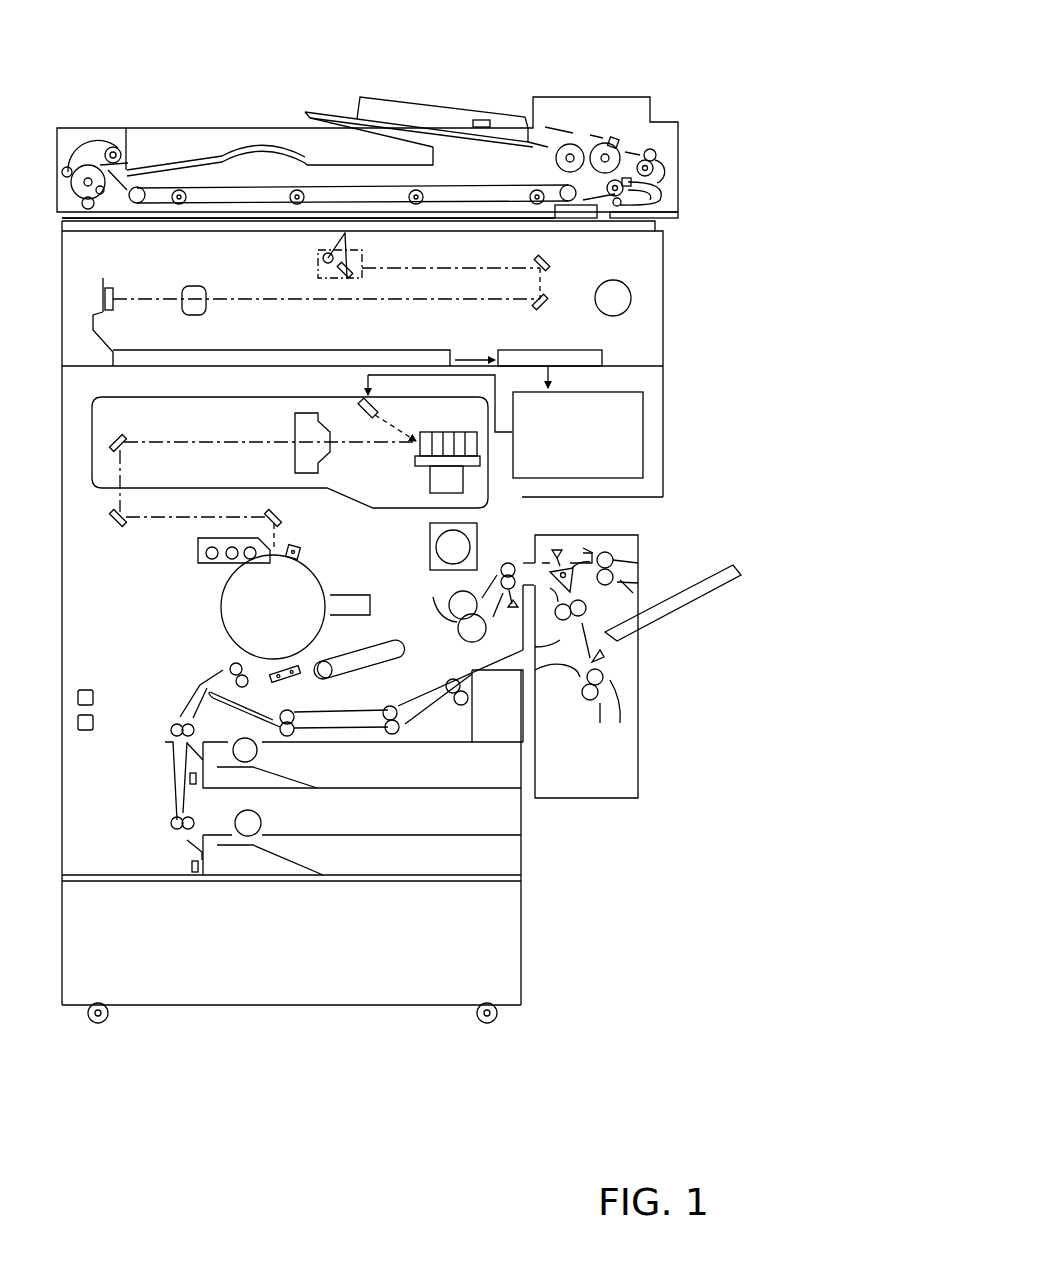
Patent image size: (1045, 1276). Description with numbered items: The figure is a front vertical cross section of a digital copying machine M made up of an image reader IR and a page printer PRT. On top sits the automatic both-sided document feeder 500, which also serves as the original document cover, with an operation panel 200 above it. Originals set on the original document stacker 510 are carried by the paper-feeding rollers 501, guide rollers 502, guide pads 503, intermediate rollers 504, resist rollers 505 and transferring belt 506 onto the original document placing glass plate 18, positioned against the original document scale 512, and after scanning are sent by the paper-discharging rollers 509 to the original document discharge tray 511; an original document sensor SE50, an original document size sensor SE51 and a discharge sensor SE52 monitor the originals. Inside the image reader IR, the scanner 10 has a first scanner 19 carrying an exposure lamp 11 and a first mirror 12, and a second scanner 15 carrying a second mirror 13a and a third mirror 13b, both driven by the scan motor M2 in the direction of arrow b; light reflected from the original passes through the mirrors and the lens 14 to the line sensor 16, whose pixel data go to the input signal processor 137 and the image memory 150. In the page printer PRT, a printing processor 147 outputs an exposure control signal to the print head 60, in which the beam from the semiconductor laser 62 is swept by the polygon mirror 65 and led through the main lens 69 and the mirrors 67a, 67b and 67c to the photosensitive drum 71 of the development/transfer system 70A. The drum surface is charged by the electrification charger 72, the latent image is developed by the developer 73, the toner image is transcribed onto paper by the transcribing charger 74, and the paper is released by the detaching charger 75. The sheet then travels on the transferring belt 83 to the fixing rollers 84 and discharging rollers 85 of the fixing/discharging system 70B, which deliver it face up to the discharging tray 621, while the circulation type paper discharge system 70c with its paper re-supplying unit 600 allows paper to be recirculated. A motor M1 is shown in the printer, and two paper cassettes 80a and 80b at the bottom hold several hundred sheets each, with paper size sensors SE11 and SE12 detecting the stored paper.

The automatic both-sided document feeder 500 is at (232, 125).
The operation panel 200 is at (578, 97).
The copying machine M is at (340, 75).
The paper-discharging rollers 509 is at (118, 148).
The discharge sensor SE52 is at (110, 193).
The original document discharge tray 511 is at (180, 172).
The original document stacker 510 is at (425, 118).
The original document sensor SE50 is at (481, 118).
The paper-feeding rollers 501 is at (560, 144).
The guide rollers 502 is at (608, 143).
The guide pads 503 is at (647, 160).
The intermediate rollers 504 is at (656, 154).
The original document size sensor SE51 is at (632, 188).
The resist rollers 505 is at (680, 213).
The original document scale 512 is at (592, 220).
The transferring belt 506 is at (487, 214).
The original document placing glass plate 18 is at (442, 223).
The image reader IR is at (723, 297).
The scanner 10 is at (288, 290).
The arrow b (sub-scanning direction) b is at (260, 248).
The line sensor 16 is at (113, 298).
The lens 14 is at (186, 308).
The exposure lamp 11 is at (322, 257).
The first scanner 19 is at (366, 257).
The first mirror 12 is at (352, 276).
The input signal processor 137 is at (353, 350).
The image memory 150 is at (515, 350).
The second mirror 13a is at (547, 259).
The third mirror 13b is at (546, 307).
The second scanner 15 is at (543, 287).
The scan motor M2 is at (613, 298).
The page printer PRT is at (740, 473).
The printing processor 147 is at (645, 405).
The print head 60 is at (255, 428).
The mirror 67a is at (125, 436).
The semiconductor laser 62 is at (360, 410).
The main lens 69 is at (295, 460).
The polygon mirror 65 is at (447, 455).
The mirror 67b is at (117, 526).
The mirror 67c is at (280, 516).
The developer 73 is at (198, 549).
The electrification charger 72 is at (300, 550).
The development/transfer system 70A is at (185, 598).
The photosensitive drum 71 is at (240, 607).
The fixing/discharging system 70B is at (430, 622).
The motor M1 is at (453, 546).
The transferring belt 83 is at (362, 652).
The fixing rollers 84 is at (436, 596).
The discharging rollers 85 is at (507, 563).
The circulation type paper discharge system 70c is at (470, 737).
The detaching charger 75 is at (275, 713).
The transcribing charger 74 is at (240, 691).
The paper cassette 80a is at (481, 742).
The paper size sensor SE11 is at (190, 778).
The paper cassette 80b is at (405, 848).
The paper size sensor SE12 is at (192, 866).
The paper re-supplying unit 600 is at (640, 703).
The discharging tray 621 is at (720, 590).